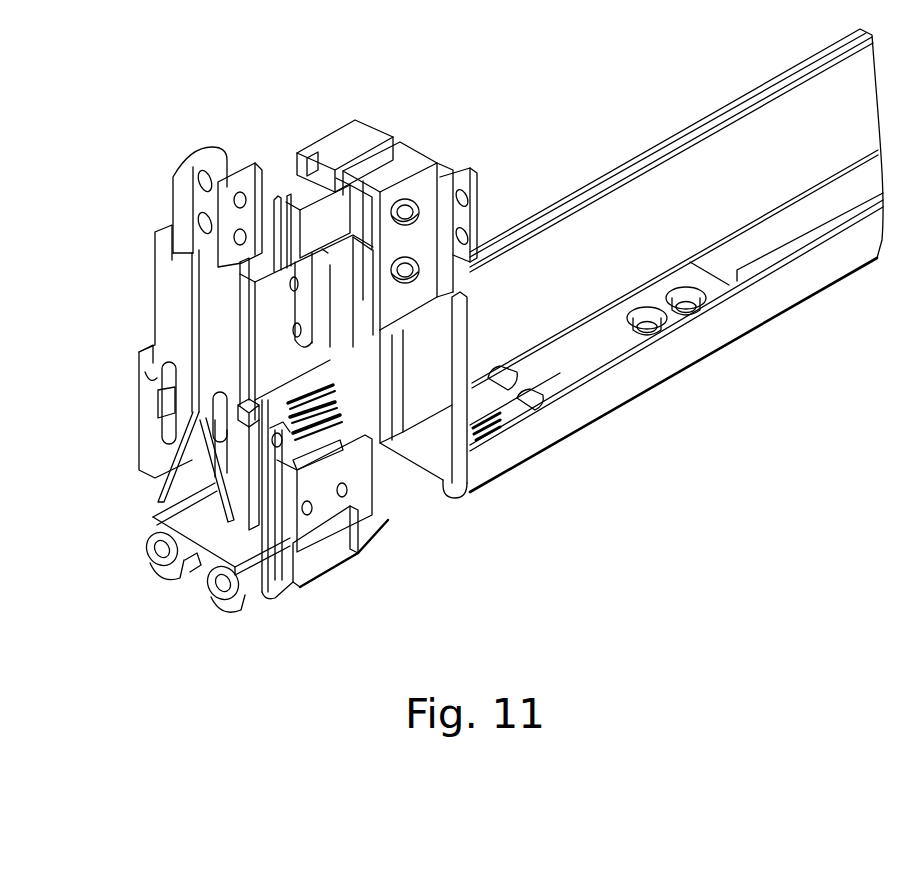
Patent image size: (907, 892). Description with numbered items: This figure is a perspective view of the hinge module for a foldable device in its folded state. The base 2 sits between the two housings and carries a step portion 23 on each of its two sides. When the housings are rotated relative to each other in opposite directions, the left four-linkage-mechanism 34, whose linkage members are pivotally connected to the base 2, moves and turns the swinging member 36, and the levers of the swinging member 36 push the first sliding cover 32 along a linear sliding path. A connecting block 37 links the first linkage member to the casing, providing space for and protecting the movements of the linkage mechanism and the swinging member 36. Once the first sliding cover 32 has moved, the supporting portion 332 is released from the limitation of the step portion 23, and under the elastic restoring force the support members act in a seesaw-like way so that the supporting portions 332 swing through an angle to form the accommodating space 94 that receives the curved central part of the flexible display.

The base 2 is at (198, 560).
The step portion 23 is at (765, 275).
The first sliding cover 32 is at (425, 228).
The left four-linkage-mechanism 34 is at (225, 602).
The swinging member 36 is at (337, 442).
The connecting block 37 is at (275, 357).
The accommodating space 94 is at (190, 517).
The supporting portion 332 is at (213, 518).